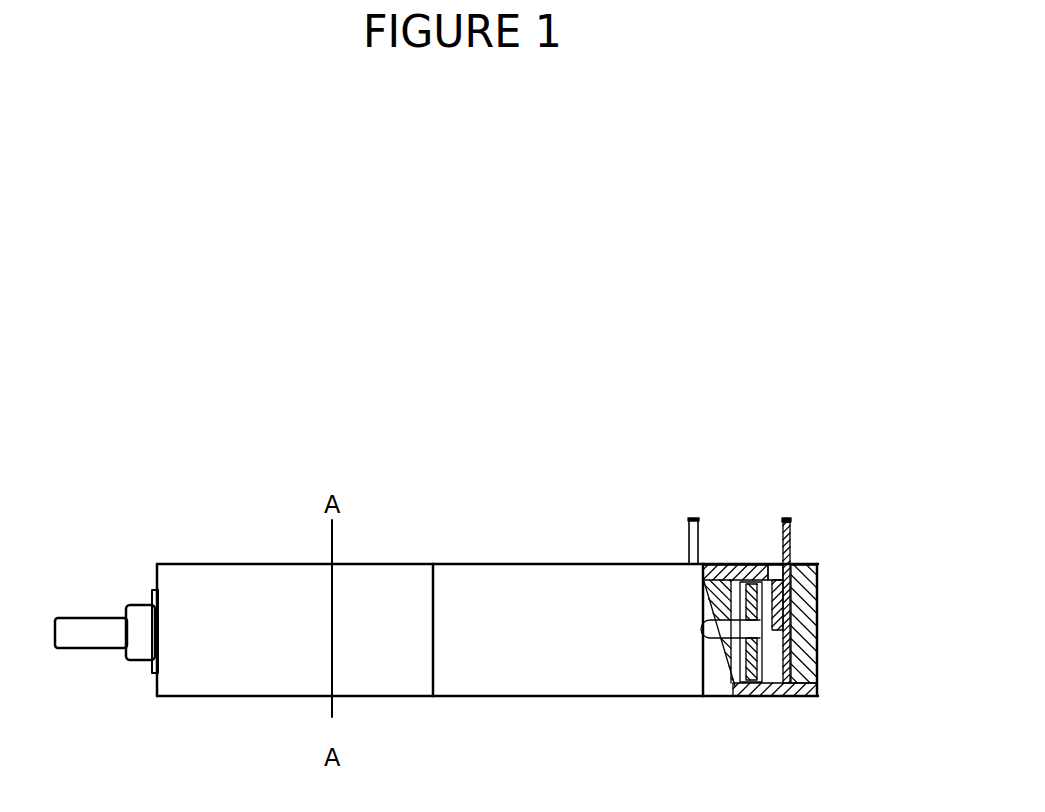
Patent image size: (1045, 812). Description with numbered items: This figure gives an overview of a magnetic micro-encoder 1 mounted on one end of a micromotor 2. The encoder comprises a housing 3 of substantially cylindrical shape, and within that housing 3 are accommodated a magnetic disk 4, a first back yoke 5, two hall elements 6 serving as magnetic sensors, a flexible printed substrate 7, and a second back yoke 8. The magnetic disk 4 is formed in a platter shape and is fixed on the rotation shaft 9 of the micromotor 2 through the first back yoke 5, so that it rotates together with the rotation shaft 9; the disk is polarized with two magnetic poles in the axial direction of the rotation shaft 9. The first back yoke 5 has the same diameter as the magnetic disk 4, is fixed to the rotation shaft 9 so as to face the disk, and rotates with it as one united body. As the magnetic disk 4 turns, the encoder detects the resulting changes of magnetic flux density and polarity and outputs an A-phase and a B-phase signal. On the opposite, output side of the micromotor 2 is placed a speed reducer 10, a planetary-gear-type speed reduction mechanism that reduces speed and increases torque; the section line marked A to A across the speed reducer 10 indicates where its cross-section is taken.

The magnetic micro-encoder 1 is at (729, 532).
The micromotor 2 is at (525, 590).
The housing 3 is at (797, 690).
The magnetic disk 4 is at (755, 680).
The first back yoke 5 is at (742, 682).
The hall elements 6 is at (778, 565).
The flexible printed substrate 7 is at (792, 540).
The second back yoke 8 is at (810, 617).
The rotation shaft 9 is at (740, 630).
The speed reducer 10 is at (312, 597).